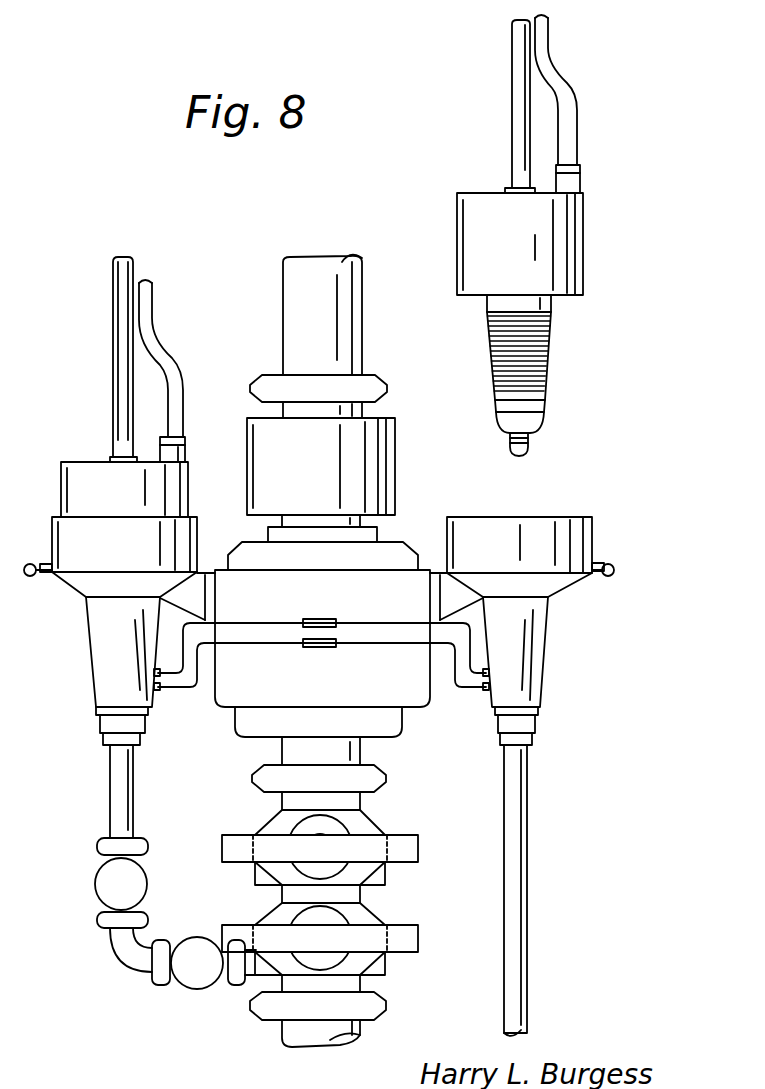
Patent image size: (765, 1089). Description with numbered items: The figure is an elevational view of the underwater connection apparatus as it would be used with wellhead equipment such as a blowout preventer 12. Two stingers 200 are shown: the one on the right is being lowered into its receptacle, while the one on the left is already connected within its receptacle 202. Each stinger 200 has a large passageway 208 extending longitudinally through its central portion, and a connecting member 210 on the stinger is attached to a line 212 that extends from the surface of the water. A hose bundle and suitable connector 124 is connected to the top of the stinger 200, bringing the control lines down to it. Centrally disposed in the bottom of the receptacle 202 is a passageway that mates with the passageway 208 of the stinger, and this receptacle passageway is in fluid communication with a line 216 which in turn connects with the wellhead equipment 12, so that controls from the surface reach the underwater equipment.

The blowout preventer 12 is at (342, 690).
The hose bundle and connector 124 is at (185, 455).
The stinger 200 is at (540, 355).
The receptacle 202 is at (97, 648).
The passageway 208 is at (530, 447).
The connecting member 210 is at (110, 460).
The line 212 is at (113, 305).
The line 216 is at (120, 812).